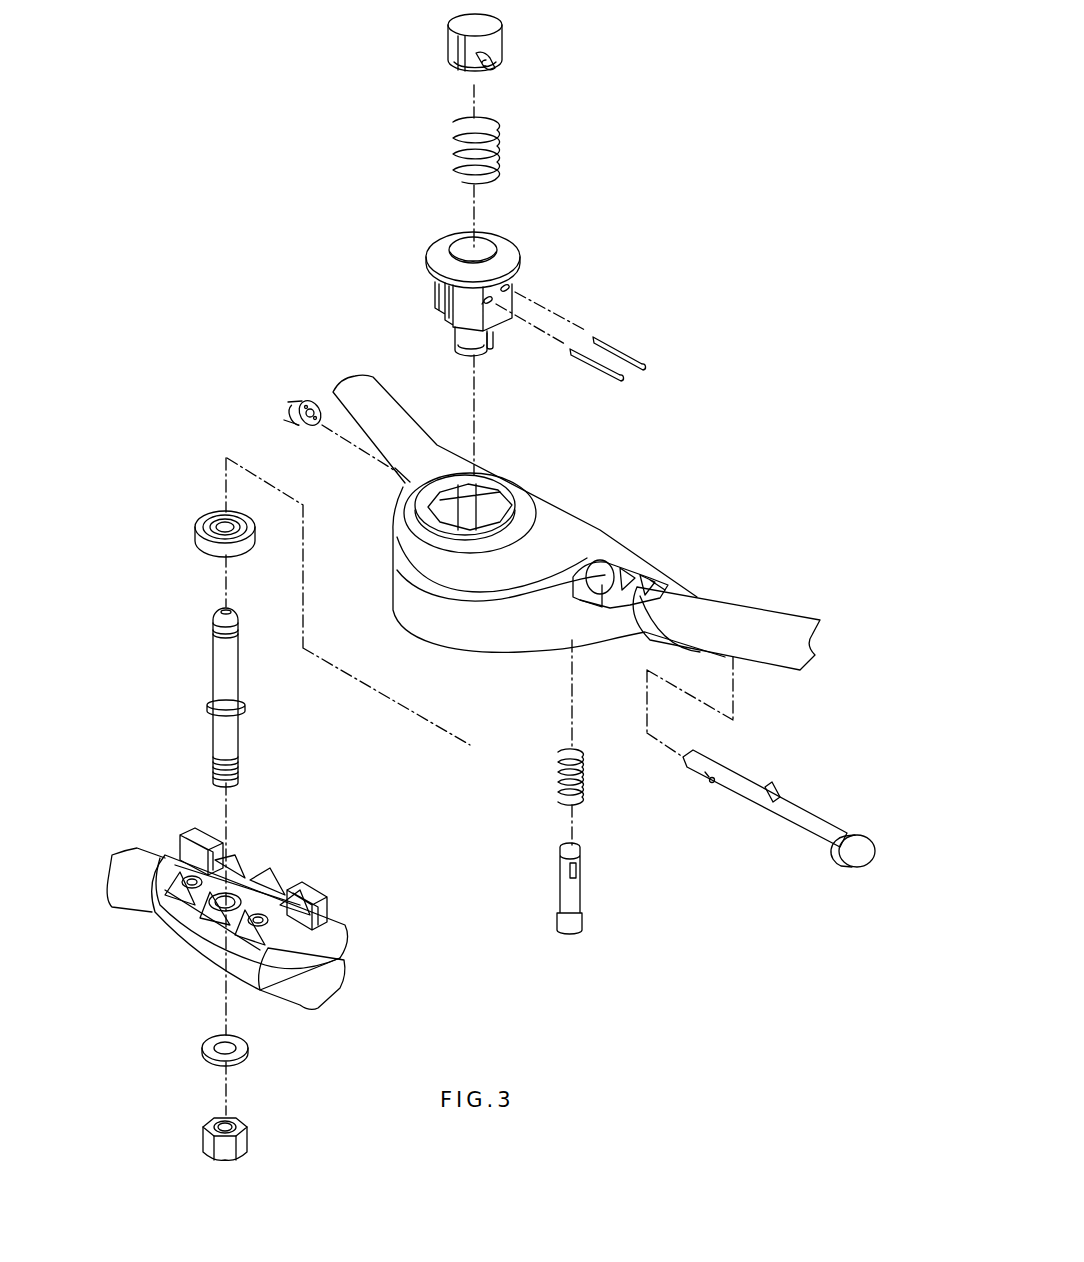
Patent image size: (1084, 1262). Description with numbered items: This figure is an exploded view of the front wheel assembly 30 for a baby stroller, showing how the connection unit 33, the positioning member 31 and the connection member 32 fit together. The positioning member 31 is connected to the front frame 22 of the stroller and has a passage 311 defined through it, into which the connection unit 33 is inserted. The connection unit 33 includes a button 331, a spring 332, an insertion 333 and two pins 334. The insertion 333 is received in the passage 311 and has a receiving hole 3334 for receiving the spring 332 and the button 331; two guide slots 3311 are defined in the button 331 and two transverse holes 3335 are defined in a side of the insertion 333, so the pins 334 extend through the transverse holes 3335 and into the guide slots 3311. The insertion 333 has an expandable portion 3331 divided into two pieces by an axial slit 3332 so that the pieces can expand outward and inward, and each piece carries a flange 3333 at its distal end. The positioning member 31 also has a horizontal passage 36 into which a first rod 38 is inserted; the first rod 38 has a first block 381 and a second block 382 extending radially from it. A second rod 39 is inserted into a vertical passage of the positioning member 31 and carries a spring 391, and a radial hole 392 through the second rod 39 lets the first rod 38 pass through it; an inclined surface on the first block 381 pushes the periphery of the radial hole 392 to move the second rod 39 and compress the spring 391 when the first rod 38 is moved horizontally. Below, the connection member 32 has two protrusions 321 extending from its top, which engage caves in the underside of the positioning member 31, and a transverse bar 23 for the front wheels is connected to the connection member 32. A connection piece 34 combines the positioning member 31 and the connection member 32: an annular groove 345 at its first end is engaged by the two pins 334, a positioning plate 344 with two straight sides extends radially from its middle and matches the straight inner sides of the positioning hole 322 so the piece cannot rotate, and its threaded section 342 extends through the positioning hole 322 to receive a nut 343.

The front wheel assembly 30 is at (777, 520).
The positioning member 31 is at (529, 516).
The passage 311 is at (478, 503).
The front frame 22 is at (730, 613).
The transverse bar 23 is at (308, 980).
The connection member 32 is at (294, 906).
The protrusions 321 is at (325, 897).
The positioning hole 322 is at (235, 898).
The connection unit 33 is at (508, 315).
The button 331 is at (463, 27).
The guide slots 3311 is at (486, 67).
The spring 332 is at (450, 135).
The insertion 333 is at (510, 305).
The expandable portion 3331 is at (475, 348).
The axial slit 3332 is at (493, 347).
The flange 3333 is at (455, 345).
The receiving hole 3334 is at (455, 252).
The transverse holes 3335 is at (510, 288).
The pins 334 is at (631, 357).
The connection piece 34 is at (199, 697).
The threaded section 342 is at (228, 775).
The nut 343 is at (240, 1142).
The positioning plate 344 is at (207, 706).
The annular groove 345 is at (215, 628).
The horizontal passage 36 is at (600, 577).
The first rod 38 is at (741, 810).
The first block 381 is at (772, 790).
The second block 382 is at (710, 781).
The second rod 39 is at (621, 888).
The spring 391 is at (556, 797).
The radial hole 392 is at (578, 868).